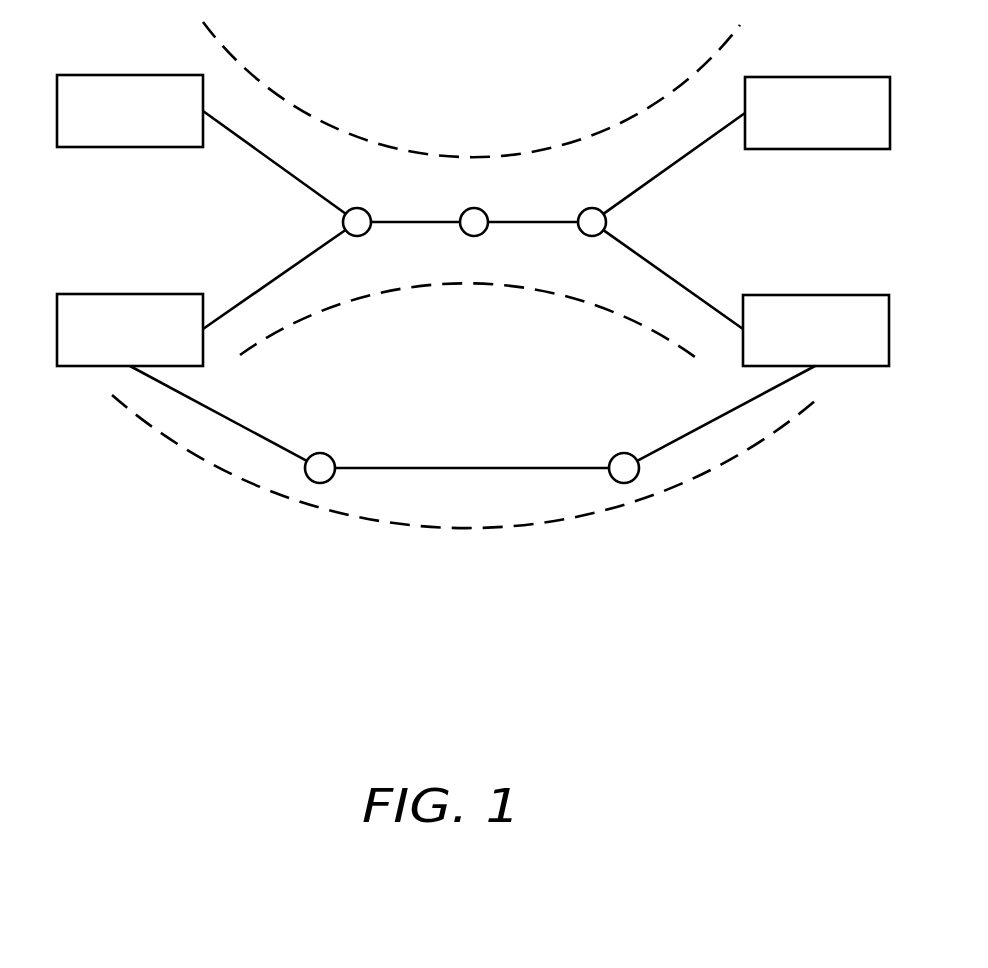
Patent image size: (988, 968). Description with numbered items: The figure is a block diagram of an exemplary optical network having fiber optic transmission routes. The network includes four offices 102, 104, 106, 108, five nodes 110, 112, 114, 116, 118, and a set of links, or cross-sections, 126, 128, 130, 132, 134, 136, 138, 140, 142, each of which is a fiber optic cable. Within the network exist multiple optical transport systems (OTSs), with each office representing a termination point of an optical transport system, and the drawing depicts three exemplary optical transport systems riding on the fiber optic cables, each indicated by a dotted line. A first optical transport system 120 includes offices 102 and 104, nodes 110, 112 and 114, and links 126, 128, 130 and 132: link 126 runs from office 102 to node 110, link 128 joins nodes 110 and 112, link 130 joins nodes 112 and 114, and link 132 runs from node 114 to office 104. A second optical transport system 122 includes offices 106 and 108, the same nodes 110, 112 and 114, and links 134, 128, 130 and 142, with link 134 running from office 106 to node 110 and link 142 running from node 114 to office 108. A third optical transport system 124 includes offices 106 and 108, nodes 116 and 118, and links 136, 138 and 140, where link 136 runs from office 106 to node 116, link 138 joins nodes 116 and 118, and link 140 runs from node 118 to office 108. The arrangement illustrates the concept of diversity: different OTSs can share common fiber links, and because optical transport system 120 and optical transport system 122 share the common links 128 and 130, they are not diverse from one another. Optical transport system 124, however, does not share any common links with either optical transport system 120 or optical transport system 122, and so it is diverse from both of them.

The office 102 is at (128, 72).
The office 104 is at (818, 77).
The office 106 is at (130, 292).
The office 108 is at (817, 294).
The node 110 is at (352, 208).
The node 112 is at (477, 203).
The node 114 is at (593, 204).
The node 116 is at (322, 452).
The node 118 is at (627, 452).
The optical transport system 120 is at (640, 110).
The optical transport system 122 is at (330, 310).
The optical transport system 124 is at (623, 507).
The link 126 is at (248, 153).
The link 128 is at (405, 225).
The link 130 is at (533, 222).
The link 132 is at (700, 153).
The link 134 is at (243, 293).
The link 136 is at (257, 437).
The link 138 is at (468, 465).
The link 140 is at (715, 422).
The link 142 is at (705, 295).